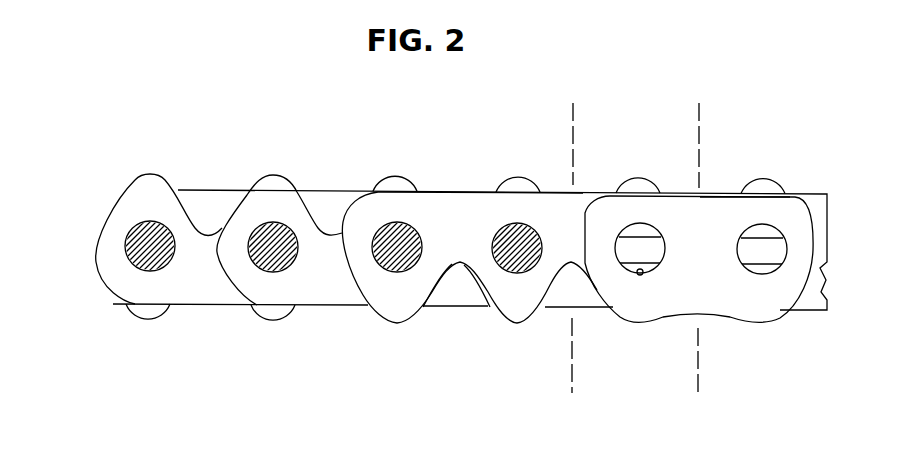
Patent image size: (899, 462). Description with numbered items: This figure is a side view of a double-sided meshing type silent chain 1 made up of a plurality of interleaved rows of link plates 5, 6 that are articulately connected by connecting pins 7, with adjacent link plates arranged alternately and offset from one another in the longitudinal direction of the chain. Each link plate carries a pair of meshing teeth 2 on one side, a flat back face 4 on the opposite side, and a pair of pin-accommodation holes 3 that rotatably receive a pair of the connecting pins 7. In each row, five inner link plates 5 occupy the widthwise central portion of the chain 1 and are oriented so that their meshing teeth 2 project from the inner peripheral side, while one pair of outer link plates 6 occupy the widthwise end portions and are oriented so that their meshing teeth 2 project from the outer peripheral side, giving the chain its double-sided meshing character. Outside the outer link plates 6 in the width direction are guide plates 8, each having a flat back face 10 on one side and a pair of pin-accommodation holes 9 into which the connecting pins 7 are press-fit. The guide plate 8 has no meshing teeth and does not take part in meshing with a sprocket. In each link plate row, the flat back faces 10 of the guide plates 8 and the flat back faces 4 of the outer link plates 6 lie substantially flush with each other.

The double-sided meshing type silent chain 1 is at (658, 168).
The meshing teeth 2 is at (273, 180).
The pin-accommodation holes 3 is at (377, 239).
The flat back face 4 is at (463, 193).
The inner link plates 5 is at (197, 295).
The outer link plates 6 is at (447, 198).
The connecting pins 7 is at (132, 236).
The guide plates 8 is at (727, 303).
The pin-accommodation holes 9 is at (640, 275).
The flat back face 10 is at (720, 193).